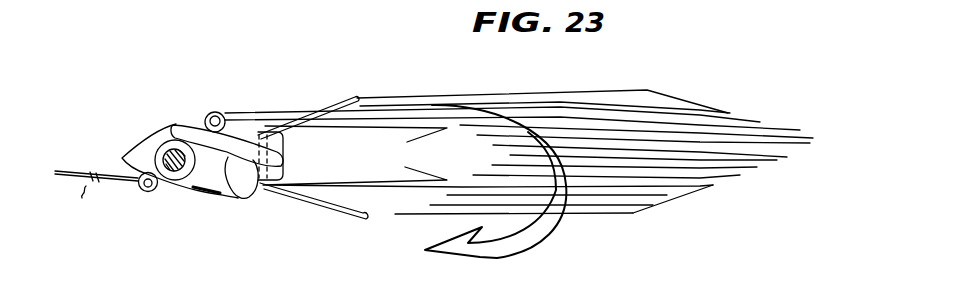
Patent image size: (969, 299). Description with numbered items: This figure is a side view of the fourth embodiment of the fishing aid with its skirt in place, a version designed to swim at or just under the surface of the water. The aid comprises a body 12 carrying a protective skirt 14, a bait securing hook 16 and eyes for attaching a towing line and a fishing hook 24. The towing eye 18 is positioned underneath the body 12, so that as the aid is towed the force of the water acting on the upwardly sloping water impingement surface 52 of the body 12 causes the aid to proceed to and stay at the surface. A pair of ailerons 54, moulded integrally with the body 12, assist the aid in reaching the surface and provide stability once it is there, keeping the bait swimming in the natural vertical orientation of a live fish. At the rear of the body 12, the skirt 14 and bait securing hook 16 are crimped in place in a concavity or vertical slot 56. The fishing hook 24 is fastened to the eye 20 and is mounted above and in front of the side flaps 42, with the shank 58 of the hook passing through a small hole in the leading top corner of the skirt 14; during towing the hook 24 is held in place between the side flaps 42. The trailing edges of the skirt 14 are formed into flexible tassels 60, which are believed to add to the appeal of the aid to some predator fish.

The body 12 is at (163, 138).
The protective skirt 14 is at (378, 167).
The bait securing hook 16 is at (322, 190).
The towing eye 18 is at (150, 192).
The eye 20 is at (207, 112).
The fishing hook 24 is at (533, 244).
The side flaps 42 is at (667, 164).
The water impingement surface 52 is at (125, 165).
The ailerons 54 is at (238, 195).
The vertical slot 56 is at (283, 128).
The shank 58 is at (312, 112).
The tassels 60 is at (668, 103).